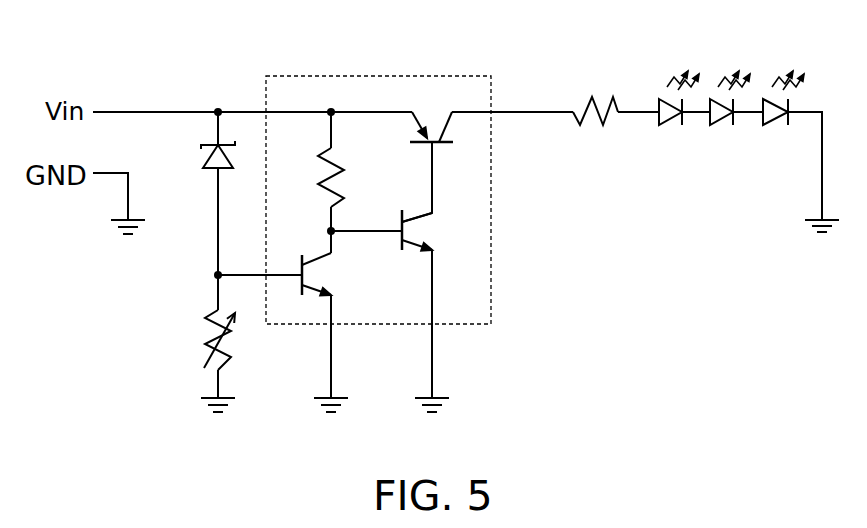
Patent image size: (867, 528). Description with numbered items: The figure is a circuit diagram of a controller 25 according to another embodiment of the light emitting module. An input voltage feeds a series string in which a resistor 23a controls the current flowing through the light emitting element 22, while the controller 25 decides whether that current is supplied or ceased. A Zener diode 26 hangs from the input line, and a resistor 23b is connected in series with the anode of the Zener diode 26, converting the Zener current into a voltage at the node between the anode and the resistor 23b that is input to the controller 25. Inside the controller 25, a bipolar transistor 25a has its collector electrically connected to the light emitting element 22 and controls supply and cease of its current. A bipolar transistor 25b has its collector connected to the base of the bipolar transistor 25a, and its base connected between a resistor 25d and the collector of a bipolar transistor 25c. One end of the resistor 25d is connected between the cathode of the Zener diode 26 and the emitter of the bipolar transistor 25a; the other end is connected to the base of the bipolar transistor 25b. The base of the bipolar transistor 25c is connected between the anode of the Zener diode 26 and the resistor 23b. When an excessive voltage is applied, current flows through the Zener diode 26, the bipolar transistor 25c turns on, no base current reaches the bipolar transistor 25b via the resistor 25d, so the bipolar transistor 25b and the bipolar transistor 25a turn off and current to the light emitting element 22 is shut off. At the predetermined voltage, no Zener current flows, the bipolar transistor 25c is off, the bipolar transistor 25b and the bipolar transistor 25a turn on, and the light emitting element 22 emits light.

The light emitting element 22 is at (713, 132).
The resistor 23a is at (598, 132).
The resistor 23b is at (232, 360).
The controller 25 is at (428, 76).
The bipolar transistor 25a is at (442, 148).
The bipolar transistor 25b is at (426, 231).
The bipolar transistor 25c is at (328, 275).
The resistor 25d is at (320, 148).
The Zener diode 26 is at (210, 175).